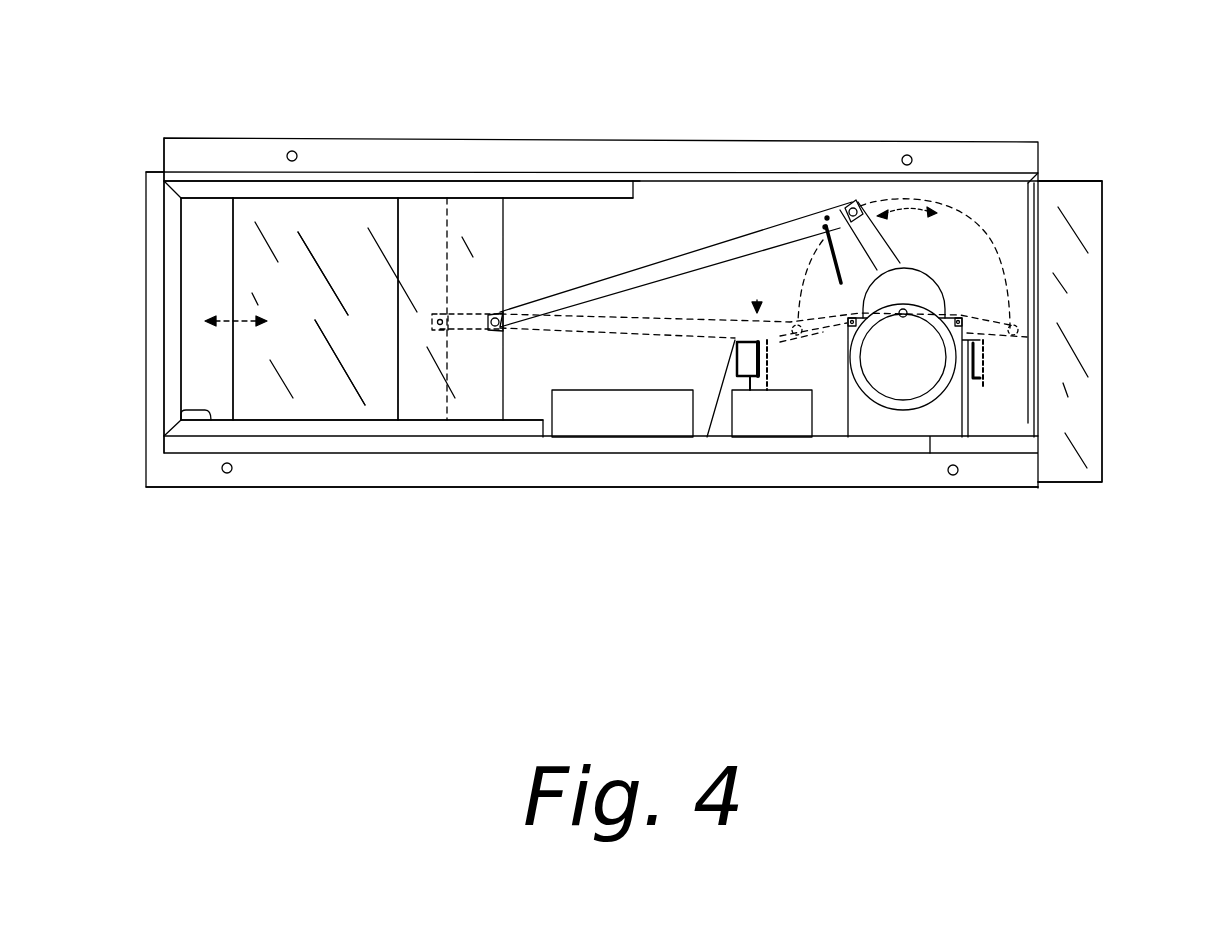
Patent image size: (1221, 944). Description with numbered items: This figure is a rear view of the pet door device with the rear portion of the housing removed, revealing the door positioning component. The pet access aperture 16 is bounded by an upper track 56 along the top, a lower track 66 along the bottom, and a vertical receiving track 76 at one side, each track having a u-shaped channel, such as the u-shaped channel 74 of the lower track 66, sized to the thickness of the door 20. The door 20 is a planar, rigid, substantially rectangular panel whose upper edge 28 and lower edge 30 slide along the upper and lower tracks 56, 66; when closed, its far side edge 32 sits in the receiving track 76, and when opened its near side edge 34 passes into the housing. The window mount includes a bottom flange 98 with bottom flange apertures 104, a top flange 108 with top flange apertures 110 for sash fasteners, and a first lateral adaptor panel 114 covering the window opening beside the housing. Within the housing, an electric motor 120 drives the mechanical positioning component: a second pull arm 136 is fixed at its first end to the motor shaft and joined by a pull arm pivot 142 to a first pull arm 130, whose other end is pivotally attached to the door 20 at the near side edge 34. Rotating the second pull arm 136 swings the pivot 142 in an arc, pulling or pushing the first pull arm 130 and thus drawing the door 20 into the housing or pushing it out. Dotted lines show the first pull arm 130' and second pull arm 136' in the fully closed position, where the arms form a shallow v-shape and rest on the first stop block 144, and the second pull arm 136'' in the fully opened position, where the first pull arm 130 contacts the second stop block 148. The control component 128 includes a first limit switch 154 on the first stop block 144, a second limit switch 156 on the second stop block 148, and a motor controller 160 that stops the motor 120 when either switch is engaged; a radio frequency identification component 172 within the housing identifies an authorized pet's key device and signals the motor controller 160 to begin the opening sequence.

The pet access aperture 16 is at (197, 248).
The door 20 is at (247, 402).
The upper edge 28 is at (360, 197).
The lower edge 30 is at (360, 420).
The far side edge 32 is at (233, 360).
The near side edge 34 is at (507, 230).
The upper track 56 is at (220, 187).
The lower track 66 is at (193, 430).
The u-shaped channel 74 is at (178, 418).
The receiving track 76 is at (170, 315).
The bottom flange 98 is at (452, 487).
The bottom flange apertures 104 is at (233, 477).
The top flange 108 is at (507, 138).
The top flange apertures 110 is at (297, 148).
The first lateral adaptor panel 114 is at (1105, 253).
The electric motor 120 is at (910, 422).
The control component 128 is at (757, 302).
The first pull arm 130 is at (670, 173).
The first pull arm 130' is at (729, 470).
The second pull arm 136 is at (1018, 234).
The second pull arm 136' is at (860, 448).
The second pull arm 136'' is at (1029, 272).
The pull arm pivot 142 is at (855, 205).
The first stop block 144 is at (718, 425).
The second stop block 148 is at (970, 420).
The first limit switch 154 is at (750, 392).
The second limit switch 156 is at (972, 380).
The motor controller 160 is at (793, 430).
The radio frequency identification component 172 is at (605, 423).